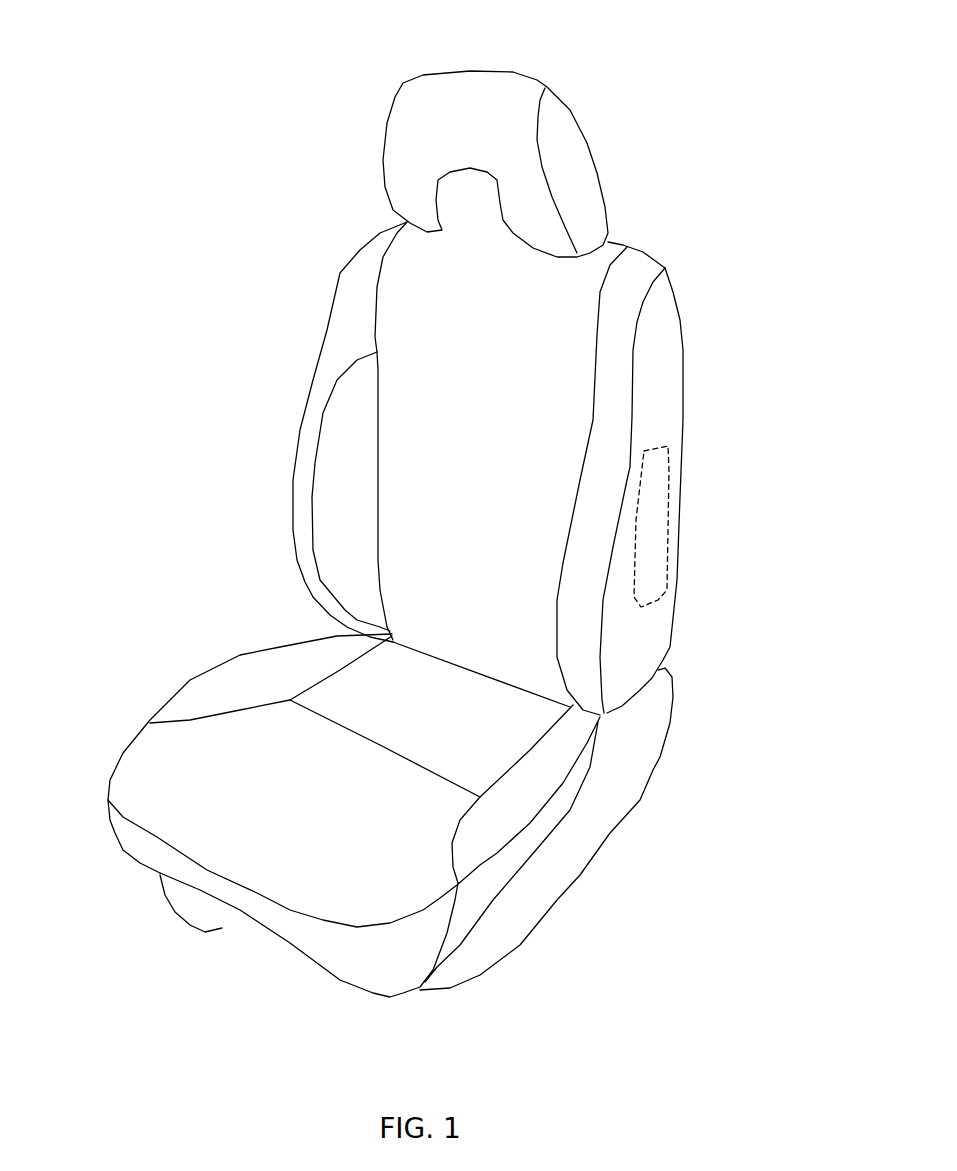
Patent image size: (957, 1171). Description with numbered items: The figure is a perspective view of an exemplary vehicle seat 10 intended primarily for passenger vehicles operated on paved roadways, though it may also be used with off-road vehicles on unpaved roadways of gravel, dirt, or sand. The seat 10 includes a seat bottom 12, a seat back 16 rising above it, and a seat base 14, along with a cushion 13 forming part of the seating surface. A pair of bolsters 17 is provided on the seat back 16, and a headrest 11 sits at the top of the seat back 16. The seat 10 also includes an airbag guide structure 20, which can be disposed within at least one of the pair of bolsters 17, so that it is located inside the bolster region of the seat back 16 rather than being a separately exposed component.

The vehicle seat 10 is at (648, 92).
The headrest 11 is at (517, 72).
The seat bottom 12 is at (110, 836).
The cushion 13 is at (242, 860).
The seat base 14 is at (632, 743).
The seat back 16 is at (678, 320).
The pair of bolsters 17 is at (307, 502).
The airbag guide structure 20 is at (668, 443).